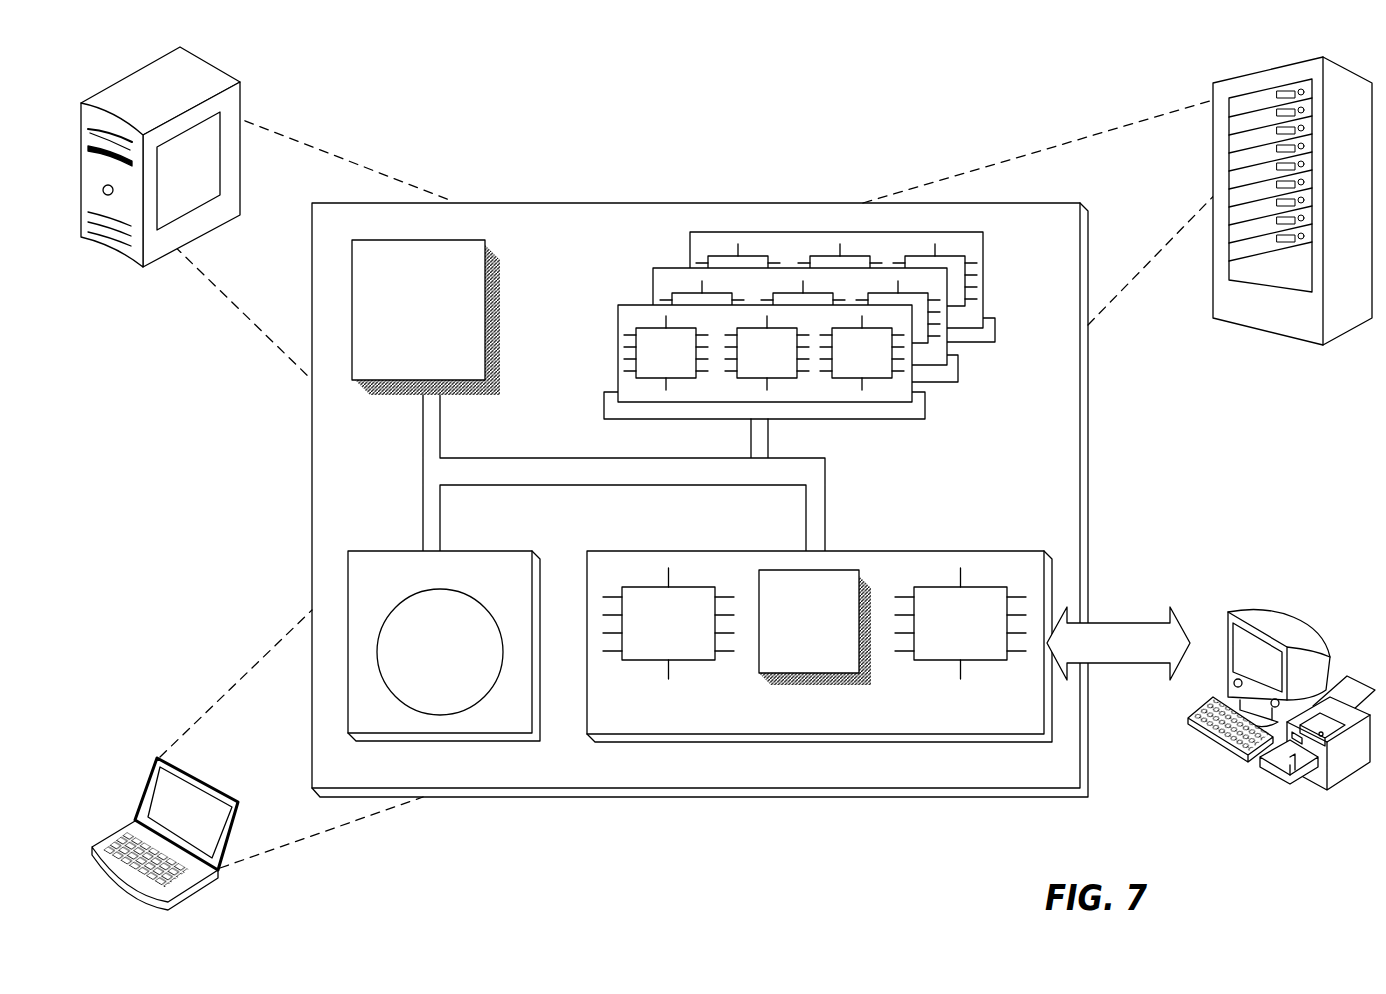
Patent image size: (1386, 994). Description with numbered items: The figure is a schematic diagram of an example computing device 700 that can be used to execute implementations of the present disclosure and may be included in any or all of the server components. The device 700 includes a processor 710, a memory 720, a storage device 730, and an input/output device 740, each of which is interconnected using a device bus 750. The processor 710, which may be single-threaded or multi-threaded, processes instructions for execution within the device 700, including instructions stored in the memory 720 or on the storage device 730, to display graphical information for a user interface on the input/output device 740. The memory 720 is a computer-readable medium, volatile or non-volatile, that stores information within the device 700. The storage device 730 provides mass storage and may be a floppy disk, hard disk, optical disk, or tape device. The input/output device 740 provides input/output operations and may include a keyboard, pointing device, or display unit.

The computing device 700 is at (514, 118).
The processor 710 is at (476, 375).
The memory 720 is at (990, 380).
The storage device 730 is at (523, 725).
The input/output device 740 is at (1224, 617).
The device bus 750 is at (617, 476).